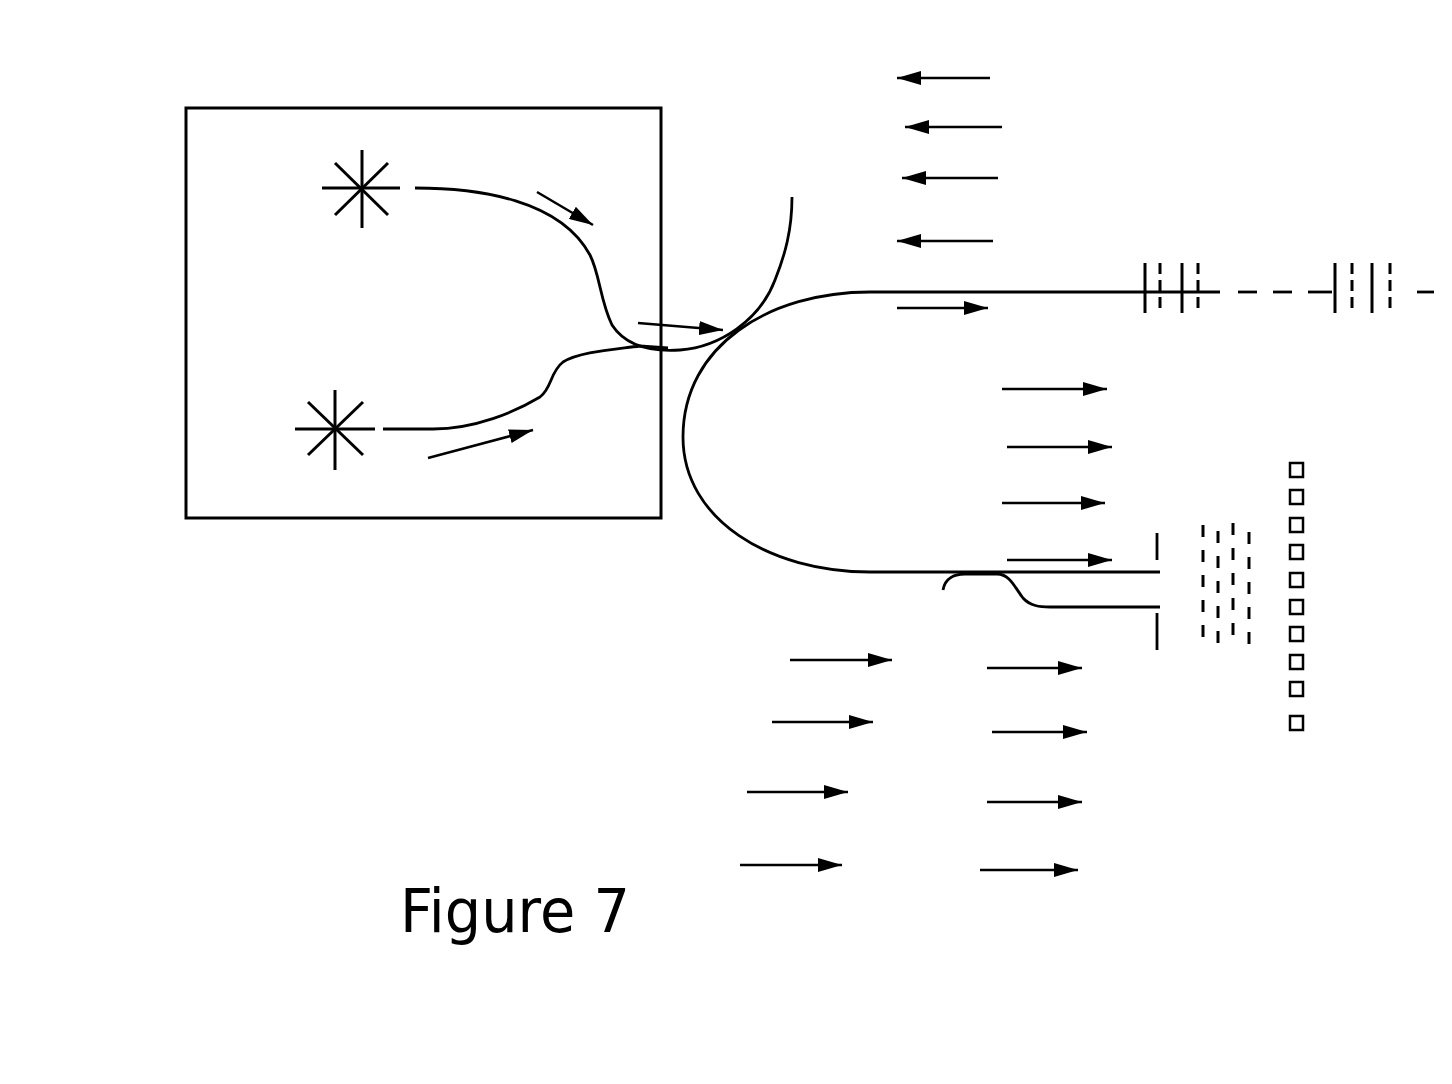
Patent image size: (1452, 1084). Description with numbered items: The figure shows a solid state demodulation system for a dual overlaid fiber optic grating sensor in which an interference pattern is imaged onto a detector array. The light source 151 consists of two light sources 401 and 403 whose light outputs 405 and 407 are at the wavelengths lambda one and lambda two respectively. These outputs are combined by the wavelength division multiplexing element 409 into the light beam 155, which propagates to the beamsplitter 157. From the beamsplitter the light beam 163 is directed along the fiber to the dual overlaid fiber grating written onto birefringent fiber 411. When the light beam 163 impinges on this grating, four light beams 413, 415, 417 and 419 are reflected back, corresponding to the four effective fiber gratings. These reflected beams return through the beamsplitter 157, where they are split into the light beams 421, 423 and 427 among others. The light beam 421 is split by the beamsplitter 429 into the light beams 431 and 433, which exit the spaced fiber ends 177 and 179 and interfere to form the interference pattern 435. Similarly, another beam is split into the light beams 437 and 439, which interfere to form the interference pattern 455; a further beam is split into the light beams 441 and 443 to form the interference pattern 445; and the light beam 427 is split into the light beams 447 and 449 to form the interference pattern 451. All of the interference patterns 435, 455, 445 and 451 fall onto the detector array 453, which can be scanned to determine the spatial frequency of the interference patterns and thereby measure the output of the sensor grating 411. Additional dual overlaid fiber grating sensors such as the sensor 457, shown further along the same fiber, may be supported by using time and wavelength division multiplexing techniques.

The light source 151 is at (423, 288).
The light source 401 is at (345, 173).
The light source 403 is at (311, 410).
The light output 405 is at (575, 182).
The light output 407 is at (482, 462).
The wavelength division multiplexing element 409 is at (525, 387).
The light beam 155 is at (603, 269).
The beamsplitter 157 is at (951, 432).
The light beam 163 is at (942, 332).
The reflected light beam 413 is at (987, 252).
The reflected light beam 415 is at (990, 185).
The reflected light beam 417 is at (996, 135).
The reflected light beam 419 is at (993, 77).
The dual overlaid fiber grating written onto birefringent fiber 411 is at (1179, 255).
The dual overlaid fiber grating sensor 457 is at (1336, 260).
The light beam 447 is at (1054, 360).
The light beam 441 is at (1059, 422).
The light beam 437 is at (1053, 480).
The light beam 431 is at (1059, 536).
The beamsplitter 429 is at (960, 562).
The fiber end 177 is at (1154, 523).
The fiber end 179 is at (1164, 656).
The interference pattern 435 is at (1203, 521).
The interference pattern 445 is at (1235, 521).
The detector array 453 is at (1318, 563).
The interference pattern 455 is at (1215, 647).
The interference pattern 451 is at (1252, 662).
The light beam 421 is at (841, 633).
The light beam 423 is at (822, 696).
The light beam 427 is at (791, 838).
The light beam 433 is at (1034, 641).
The light beam 439 is at (1039, 707).
The light beam 443 is at (1034, 776).
The light beam 449 is at (1029, 843).